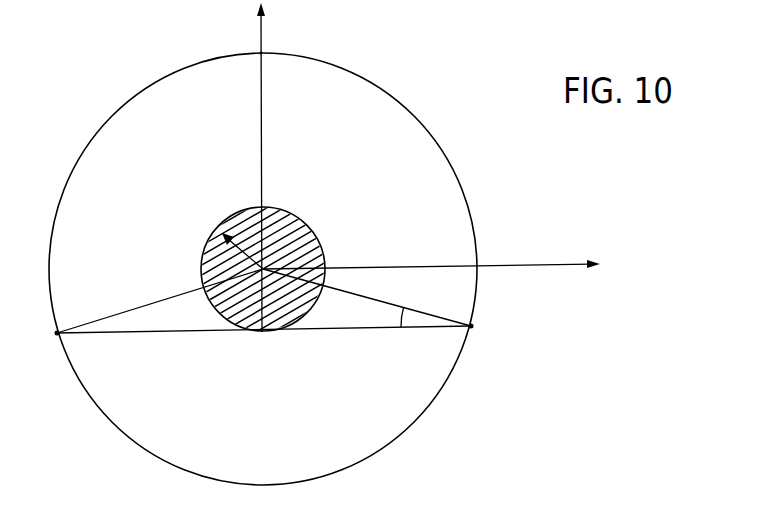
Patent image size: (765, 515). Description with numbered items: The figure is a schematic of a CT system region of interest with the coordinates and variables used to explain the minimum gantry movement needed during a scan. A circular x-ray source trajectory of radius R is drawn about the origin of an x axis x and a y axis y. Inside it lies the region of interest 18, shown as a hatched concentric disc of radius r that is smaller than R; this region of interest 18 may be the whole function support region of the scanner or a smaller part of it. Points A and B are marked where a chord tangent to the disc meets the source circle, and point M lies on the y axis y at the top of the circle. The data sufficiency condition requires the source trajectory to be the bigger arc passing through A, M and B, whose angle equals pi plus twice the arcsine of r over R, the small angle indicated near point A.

The region of interest 18 is at (198, 252).
The source trajectory radius R is at (263, 269).
The region of interest radius r is at (236, 238).
The arc endpoint A is at (484, 326).
The arc endpoint B is at (46, 335).
The arc midpoint M is at (249, 42).
The x axis x is at (431, 276).
The y axis y is at (269, 167).